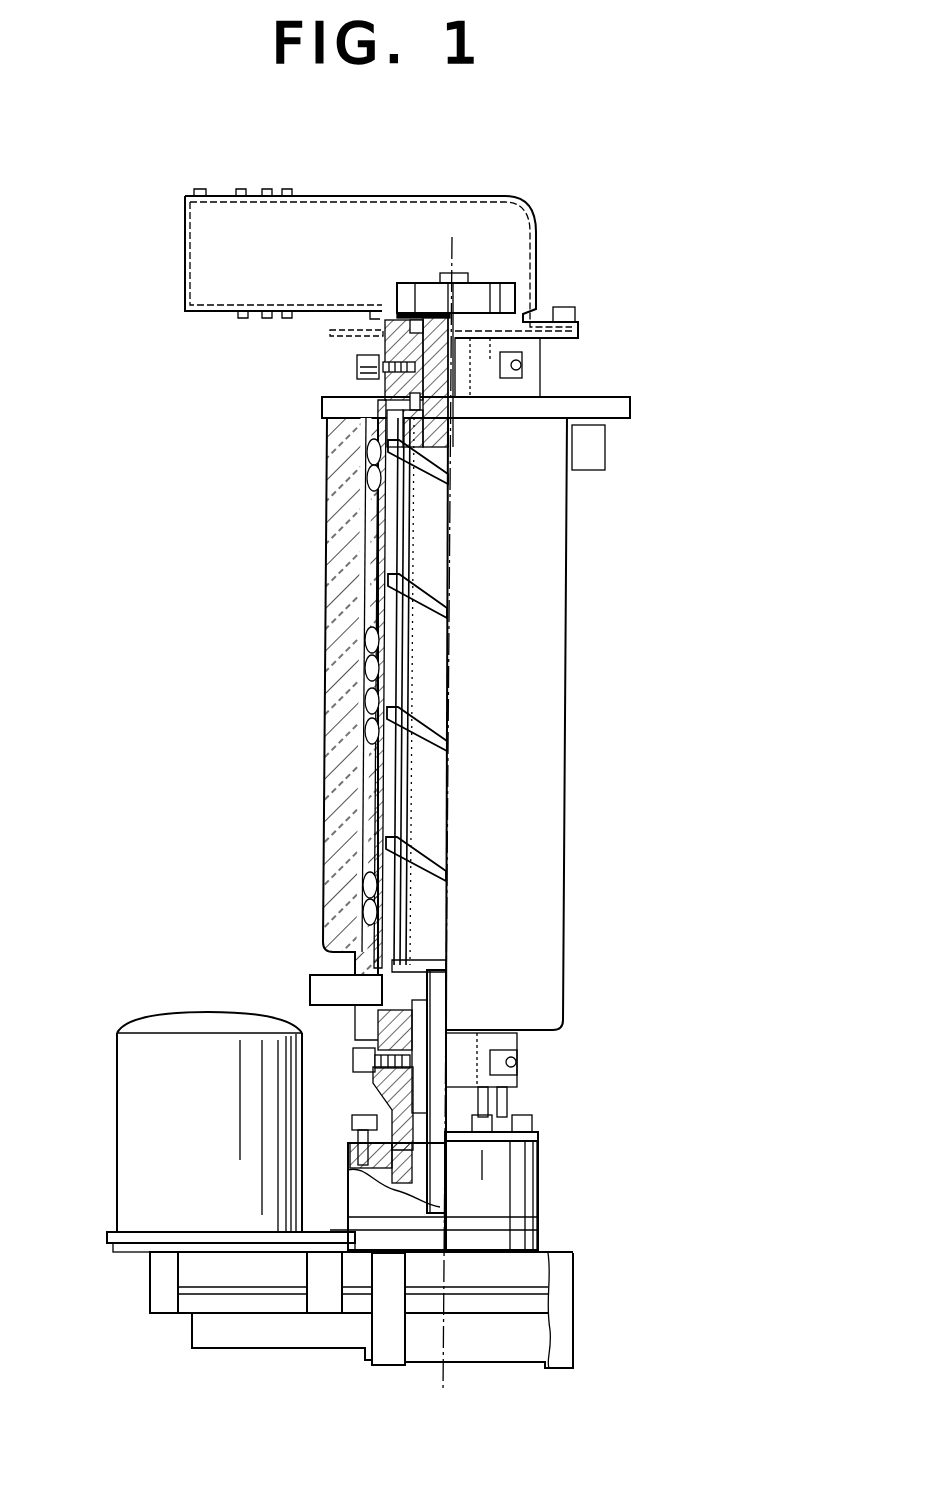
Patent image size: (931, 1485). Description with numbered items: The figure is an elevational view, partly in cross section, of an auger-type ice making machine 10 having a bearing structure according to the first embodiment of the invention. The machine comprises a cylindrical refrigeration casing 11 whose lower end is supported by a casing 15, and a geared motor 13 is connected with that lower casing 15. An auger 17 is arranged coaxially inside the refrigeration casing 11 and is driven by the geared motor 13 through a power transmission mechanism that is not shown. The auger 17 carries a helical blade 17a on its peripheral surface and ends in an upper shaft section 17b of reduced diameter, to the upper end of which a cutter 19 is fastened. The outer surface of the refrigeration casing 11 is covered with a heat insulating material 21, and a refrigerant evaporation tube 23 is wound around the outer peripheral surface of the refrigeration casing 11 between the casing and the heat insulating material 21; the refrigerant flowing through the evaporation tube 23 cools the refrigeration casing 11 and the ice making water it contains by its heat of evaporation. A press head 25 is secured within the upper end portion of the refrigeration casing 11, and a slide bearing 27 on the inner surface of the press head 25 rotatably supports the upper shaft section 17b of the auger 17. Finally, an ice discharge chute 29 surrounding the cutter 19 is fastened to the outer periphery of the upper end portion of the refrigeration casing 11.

The auger-type ice making machine 10 is at (283, 620).
The refrigeration casing 11 is at (362, 932).
The geared motor 13 is at (137, 1115).
The casing 15 is at (562, 1300).
The auger 17 is at (430, 645).
The helical blade 17a is at (425, 718).
The upper shaft section 17b is at (455, 378).
The cutter 19 is at (503, 288).
The heat insulating material 21 is at (330, 773).
The refrigerant evaporation tube 23 is at (375, 673).
The press head 25 is at (383, 343).
The slide bearing 27 is at (383, 386).
The ice discharge chute 29 is at (500, 198).